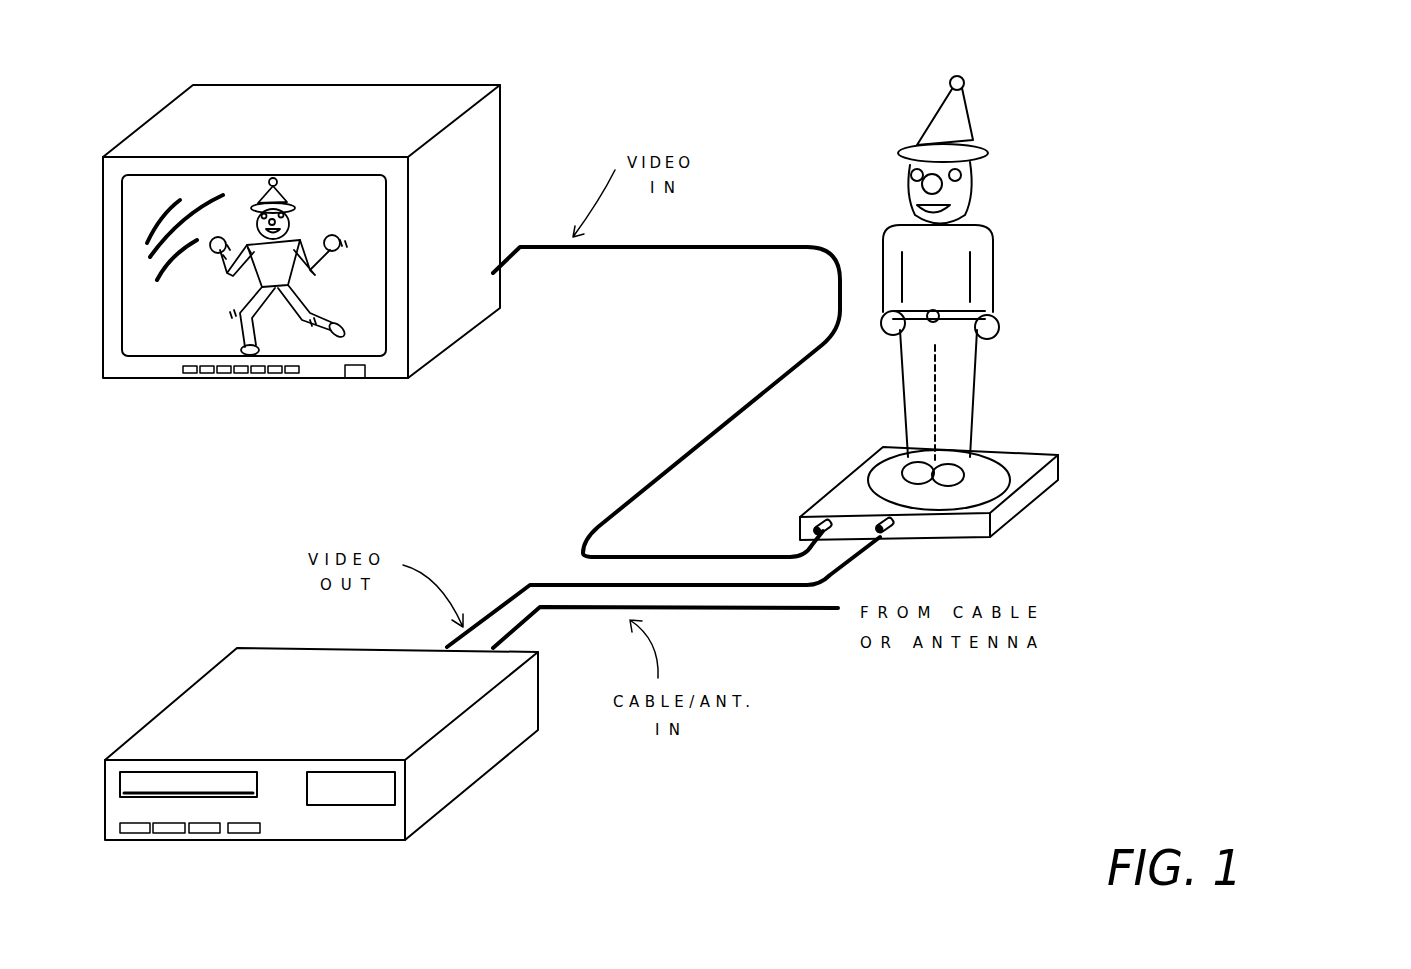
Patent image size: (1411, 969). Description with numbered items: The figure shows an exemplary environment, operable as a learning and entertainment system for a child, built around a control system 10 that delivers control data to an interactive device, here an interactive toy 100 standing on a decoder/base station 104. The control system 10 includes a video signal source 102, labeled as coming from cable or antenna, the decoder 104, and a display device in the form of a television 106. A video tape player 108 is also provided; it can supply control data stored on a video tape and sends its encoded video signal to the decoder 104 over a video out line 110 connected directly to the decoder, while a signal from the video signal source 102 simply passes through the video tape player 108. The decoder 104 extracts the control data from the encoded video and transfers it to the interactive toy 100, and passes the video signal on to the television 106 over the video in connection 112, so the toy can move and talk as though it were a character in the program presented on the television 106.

The control system 10 is at (813, 747).
The interactive toy 100 is at (957, 122).
The video signal source 102 is at (687, 613).
The decoder/base station 104 is at (1022, 497).
The television 106 is at (478, 137).
The video tape player 108 is at (485, 755).
The video out line 110 is at (853, 562).
The video in cable 112 is at (700, 555).